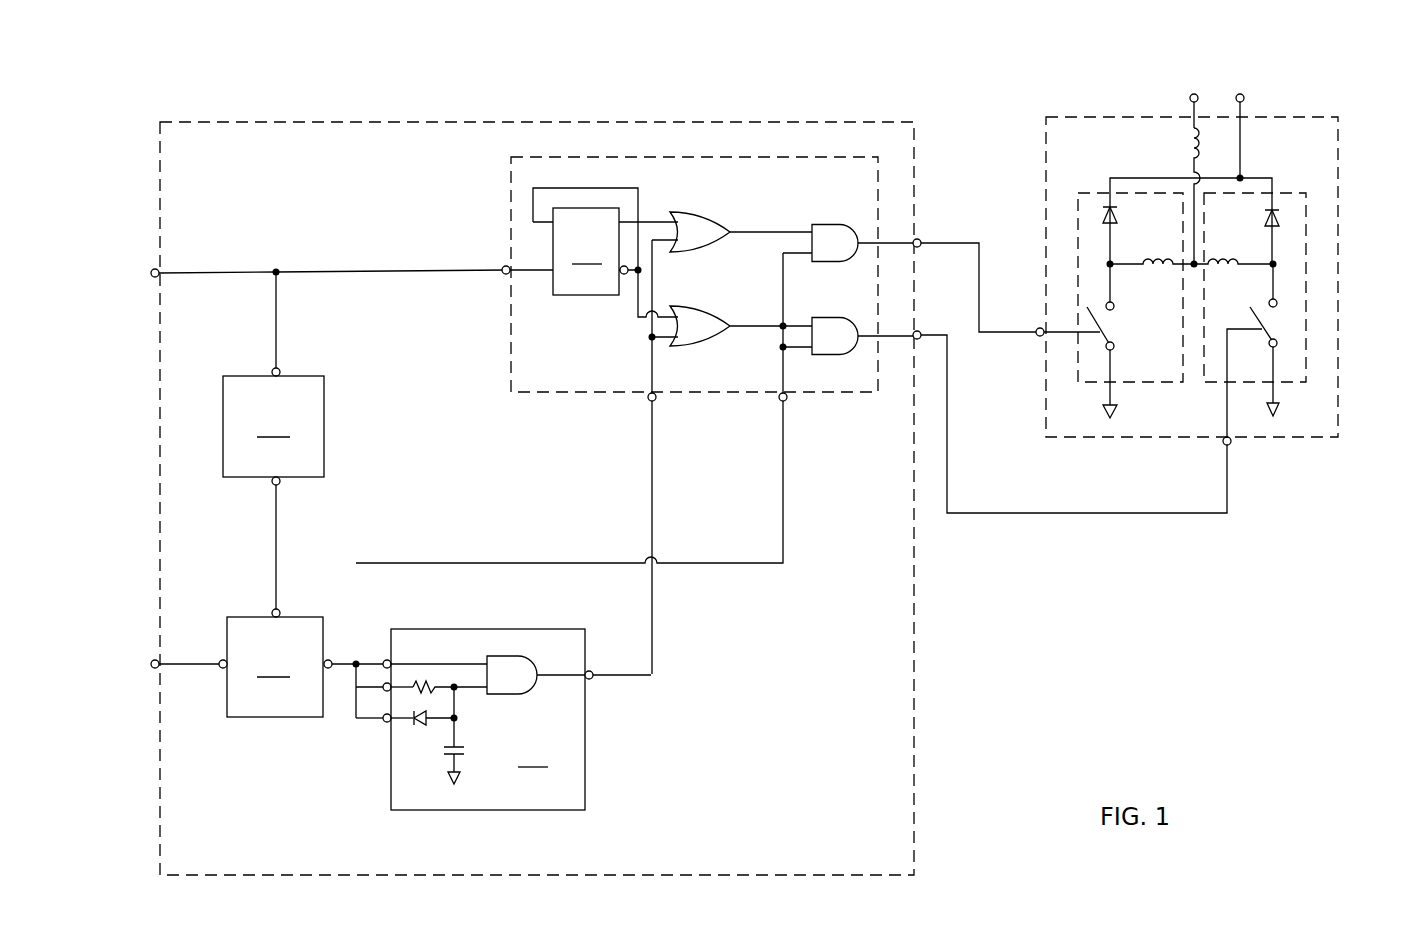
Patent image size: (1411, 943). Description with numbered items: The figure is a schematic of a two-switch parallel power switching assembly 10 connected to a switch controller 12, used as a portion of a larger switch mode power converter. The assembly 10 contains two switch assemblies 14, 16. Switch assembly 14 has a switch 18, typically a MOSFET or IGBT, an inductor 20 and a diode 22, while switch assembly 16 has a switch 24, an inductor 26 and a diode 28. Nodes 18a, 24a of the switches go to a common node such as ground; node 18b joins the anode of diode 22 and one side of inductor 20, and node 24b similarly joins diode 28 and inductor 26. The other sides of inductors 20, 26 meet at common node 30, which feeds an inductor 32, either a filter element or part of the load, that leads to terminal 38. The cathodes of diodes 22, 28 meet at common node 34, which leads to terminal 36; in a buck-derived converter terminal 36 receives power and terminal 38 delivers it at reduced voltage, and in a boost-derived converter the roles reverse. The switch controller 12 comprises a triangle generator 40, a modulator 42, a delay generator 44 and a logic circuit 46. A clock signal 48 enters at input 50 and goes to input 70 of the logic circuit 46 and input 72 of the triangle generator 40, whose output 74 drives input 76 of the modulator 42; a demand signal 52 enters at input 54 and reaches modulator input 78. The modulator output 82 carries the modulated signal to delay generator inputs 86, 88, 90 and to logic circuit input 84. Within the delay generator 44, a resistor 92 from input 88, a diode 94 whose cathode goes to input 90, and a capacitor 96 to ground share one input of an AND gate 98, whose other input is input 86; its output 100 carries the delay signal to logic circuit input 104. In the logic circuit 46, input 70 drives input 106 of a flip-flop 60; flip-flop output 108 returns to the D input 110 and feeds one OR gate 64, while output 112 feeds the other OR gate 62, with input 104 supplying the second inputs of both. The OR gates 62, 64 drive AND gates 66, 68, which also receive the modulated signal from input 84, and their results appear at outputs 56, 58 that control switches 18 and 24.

The two-switch parallel power switching assembly 10 is at (1095, 115).
The switch controller 12 is at (397, 121).
The switch assembly 14 is at (1098, 192).
The switch assembly 16 is at (1307, 193).
The switch 18 is at (1094, 342).
The node of switch 18 18a is at (1107, 351).
The node of switch 18 18b is at (1105, 305).
The inductor 20 is at (1155, 262).
The diode 22 is at (1104, 213).
The switch 24 is at (1277, 326).
The node of switch 24 24a is at (1278, 343).
The node of switch 24 24b is at (1277, 302).
The inductor 26 is at (1230, 262).
The diode 28 is at (1280, 216).
The common node 30 is at (1193, 268).
The inductor 32 is at (1188, 140).
The common node 34 is at (1241, 176).
The terminal 36 is at (1240, 94).
The terminal 38 is at (1194, 94).
The triangle generator 40 is at (273, 426).
The modulator 42 is at (275, 667).
The delay generator 44 is at (488, 719).
The logic circuit 46 is at (681, 156).
The clock signal 48 is at (102, 285).
The input 50 is at (152, 270).
The demand signal 52 is at (105, 689).
The input 54 is at (153, 660).
The output 56 is at (921, 242).
The output 58 is at (921, 333).
The flip-flop 60 is at (586, 251).
The OR gate 62 is at (703, 228).
The OR gate 64 is at (700, 318).
The AND gate 66 is at (827, 233).
The AND gate 68 is at (828, 329).
The input of logic circuit 70 is at (503, 266).
The input of triangle generator 72 is at (280, 370).
The output of triangle generator 74 is at (280, 485).
The input of modulator 76 is at (280, 611).
The input of modulator 78 is at (222, 668).
The output of modulator 82 is at (329, 668).
The input of logic circuit 84 is at (787, 401).
The delay generator input 86 is at (386, 660).
The delay generator input 88 is at (385, 691).
The delay generator input 90 is at (386, 722).
The resistor 92 is at (426, 684).
The diode 94 is at (420, 724).
The capacitor 96 is at (461, 745).
The AND gate 98 is at (508, 662).
The output of delay generator 100 is at (592, 678).
The input of logic circuit 104 is at (655, 401).
The input of flip-flop 106 is at (540, 273).
The flip-flop output 108 is at (623, 275).
The D input 110 is at (543, 221).
The flip-flop output 112 is at (640, 218).